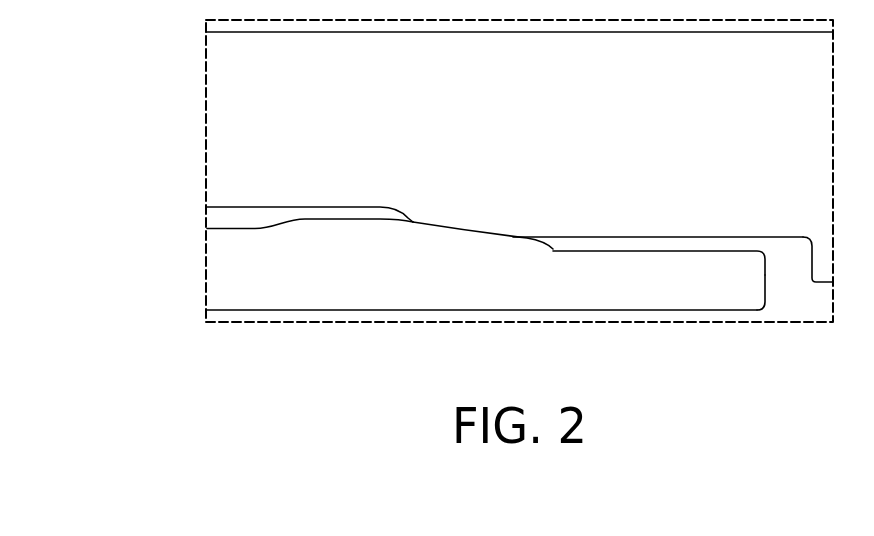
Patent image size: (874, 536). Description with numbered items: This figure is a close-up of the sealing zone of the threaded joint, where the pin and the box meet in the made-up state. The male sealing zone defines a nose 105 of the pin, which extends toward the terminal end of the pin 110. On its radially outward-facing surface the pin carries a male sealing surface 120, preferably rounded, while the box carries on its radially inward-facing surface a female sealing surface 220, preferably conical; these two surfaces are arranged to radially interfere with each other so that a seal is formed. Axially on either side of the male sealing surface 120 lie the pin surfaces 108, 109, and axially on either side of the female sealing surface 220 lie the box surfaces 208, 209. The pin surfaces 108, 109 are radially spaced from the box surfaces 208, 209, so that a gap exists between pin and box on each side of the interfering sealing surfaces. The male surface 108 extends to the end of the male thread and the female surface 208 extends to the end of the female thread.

The nose 105 is at (210, 285).
The pin surface 108 is at (218, 225).
The box surface 208 is at (218, 209).
The female sealing surface 220 is at (473, 233).
The male sealing surface 120 is at (531, 238).
The box surface 209 is at (780, 240).
The pin surface 109 is at (653, 248).
The terminal end of the pin 110 is at (765, 288).